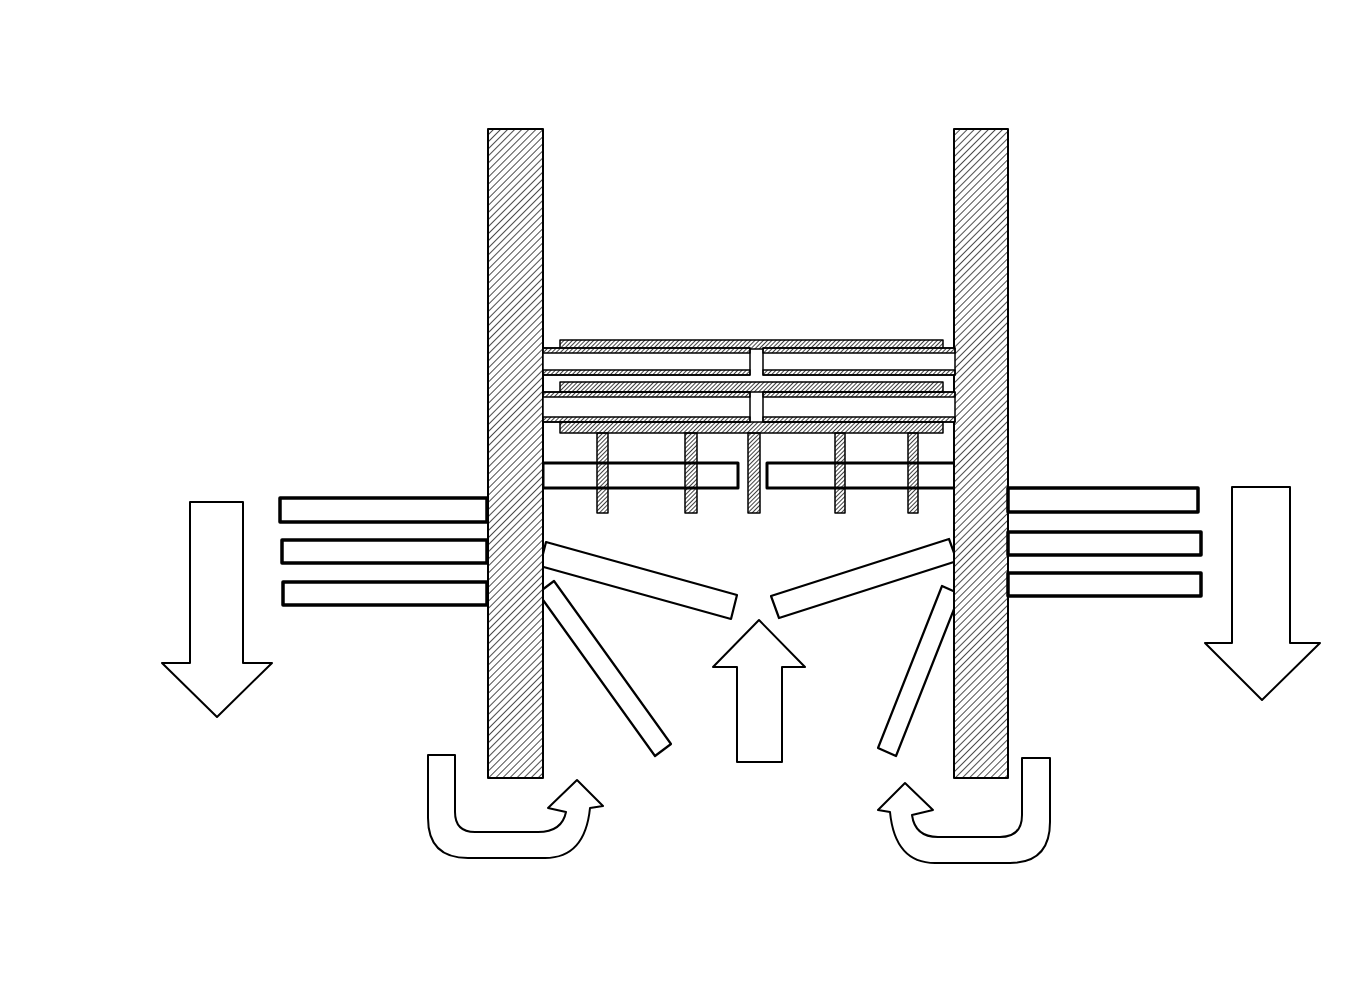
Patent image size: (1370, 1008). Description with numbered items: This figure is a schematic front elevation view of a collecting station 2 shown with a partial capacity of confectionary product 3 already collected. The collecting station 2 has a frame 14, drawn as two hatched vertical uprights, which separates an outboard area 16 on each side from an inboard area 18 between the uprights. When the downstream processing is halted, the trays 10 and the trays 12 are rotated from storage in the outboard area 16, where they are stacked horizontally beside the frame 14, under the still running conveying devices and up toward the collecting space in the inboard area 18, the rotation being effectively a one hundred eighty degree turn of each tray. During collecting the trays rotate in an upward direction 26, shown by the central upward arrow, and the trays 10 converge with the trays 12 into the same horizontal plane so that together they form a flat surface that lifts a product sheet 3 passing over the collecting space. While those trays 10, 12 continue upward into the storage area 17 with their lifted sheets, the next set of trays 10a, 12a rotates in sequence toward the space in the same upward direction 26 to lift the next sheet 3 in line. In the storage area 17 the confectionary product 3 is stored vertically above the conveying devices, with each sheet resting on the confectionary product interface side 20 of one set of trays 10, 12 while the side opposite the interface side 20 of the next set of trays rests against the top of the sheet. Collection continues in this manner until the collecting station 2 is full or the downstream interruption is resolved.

The collecting station 2 is at (418, 137).
The confectionary product 3 is at (654, 338).
The tray 10 is at (630, 381).
The tray 10a is at (628, 471).
The tray 12 is at (1010, 298).
The tray 12a is at (869, 472).
The frame 14 is at (1012, 191).
The outboard area 16 is at (285, 405).
The storage area 17 is at (607, 310).
The inboard area 18 is at (764, 212).
The confectionary product interface side 20 is at (597, 341).
The upward direction 26 is at (759, 691).